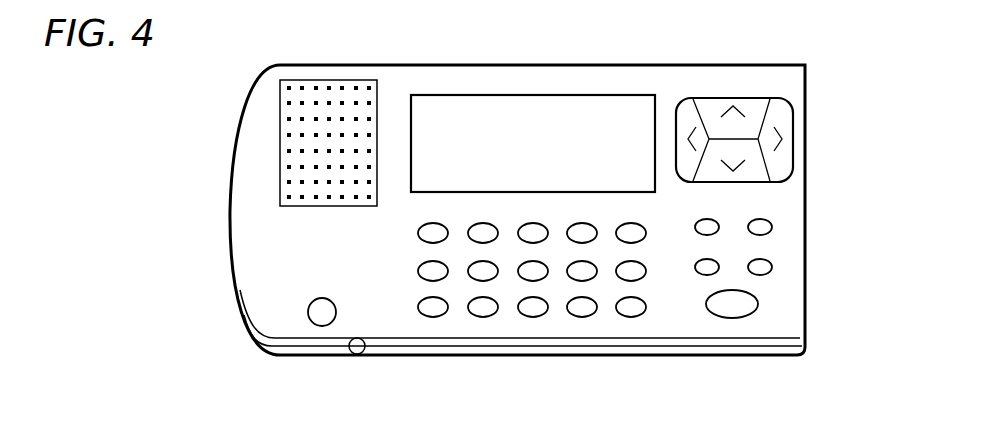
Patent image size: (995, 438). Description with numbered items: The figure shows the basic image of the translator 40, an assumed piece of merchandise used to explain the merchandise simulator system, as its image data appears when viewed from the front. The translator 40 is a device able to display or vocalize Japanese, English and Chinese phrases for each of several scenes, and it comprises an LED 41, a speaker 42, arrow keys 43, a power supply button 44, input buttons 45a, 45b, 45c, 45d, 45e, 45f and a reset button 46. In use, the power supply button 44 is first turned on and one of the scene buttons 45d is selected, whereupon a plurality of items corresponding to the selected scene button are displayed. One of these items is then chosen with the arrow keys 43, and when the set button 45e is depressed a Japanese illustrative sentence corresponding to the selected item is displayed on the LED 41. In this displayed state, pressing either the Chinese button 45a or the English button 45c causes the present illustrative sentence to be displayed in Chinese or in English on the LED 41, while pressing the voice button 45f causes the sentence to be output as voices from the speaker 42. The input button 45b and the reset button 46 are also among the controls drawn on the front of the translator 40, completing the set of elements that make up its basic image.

The translator 40 is at (731, 65).
The LED 41 is at (534, 95).
The speaker 42 is at (329, 80).
The arrow keys 43 is at (795, 122).
The power supply button 44 is at (320, 326).
The Chinese button 45a is at (433, 317).
The input button 45b is at (483, 317).
The English button 45c is at (533, 317).
The scene buttons 45d is at (437, 222).
The set button 45e is at (772, 229).
The voice button 45f is at (758, 305).
The reset button 46 is at (358, 354).